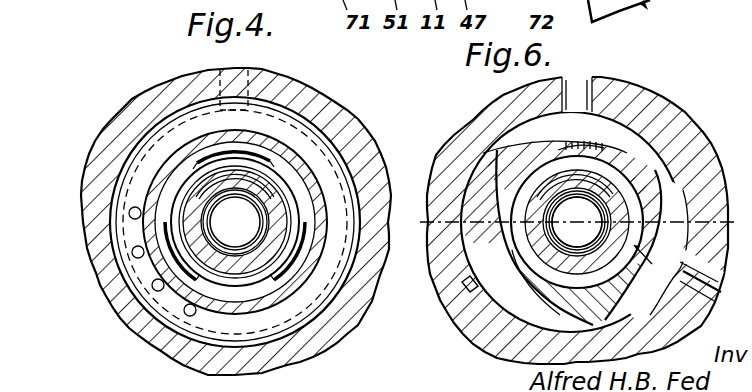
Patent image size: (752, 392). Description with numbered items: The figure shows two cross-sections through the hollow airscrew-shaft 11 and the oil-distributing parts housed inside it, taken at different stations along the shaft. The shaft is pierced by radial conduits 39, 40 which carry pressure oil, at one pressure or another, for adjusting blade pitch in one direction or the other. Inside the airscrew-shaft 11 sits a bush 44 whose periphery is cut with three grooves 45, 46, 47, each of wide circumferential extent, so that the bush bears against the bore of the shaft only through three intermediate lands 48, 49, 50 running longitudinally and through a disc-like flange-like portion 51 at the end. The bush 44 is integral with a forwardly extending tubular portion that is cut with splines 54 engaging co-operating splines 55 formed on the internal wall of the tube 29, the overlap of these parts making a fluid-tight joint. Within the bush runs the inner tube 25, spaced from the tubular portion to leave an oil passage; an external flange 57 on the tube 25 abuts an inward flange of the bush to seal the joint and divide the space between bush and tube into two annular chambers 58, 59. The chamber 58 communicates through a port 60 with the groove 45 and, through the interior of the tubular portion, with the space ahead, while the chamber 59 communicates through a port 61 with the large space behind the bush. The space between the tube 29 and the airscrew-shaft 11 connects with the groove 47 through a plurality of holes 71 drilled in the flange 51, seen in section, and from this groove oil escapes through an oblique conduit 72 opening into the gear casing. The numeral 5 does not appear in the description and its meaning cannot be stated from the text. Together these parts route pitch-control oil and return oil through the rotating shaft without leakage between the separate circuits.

In FIG. 4, the shaft 5 is at (160, 268).
In FIG. 6, the shaft 5 is at (577, 222).
In FIG. 4, the airscrew-shaft 11 is at (293, 100).
In FIG. 6, the airscrew-shaft 11 is at (478, 126).
In FIG. 4, the inner tube 25 is at (186, 133).
In FIG. 6, the inner tube 25 is at (495, 270).
In FIG. 4, the tube 29 is at (197, 200).
In FIG. 4, the radial conduit 39 is at (242, 74).
In FIG. 6, the radial conduit 39 is at (577, 96).
In FIG. 4, the radial conduit 40 is at (378, 282).
In FIG. 6, the radial conduit 40 is at (665, 270).
In FIG. 6, the bush 44 is at (543, 250).
In FIG. 6, the groove 45 is at (533, 132).
In FIG. 6, the groove 46 is at (718, 167).
In FIG. 6, the groove 47 is at (472, 300).
In FIG. 6, the land 48 is at (482, 170).
In FIG. 6, the land 49 is at (670, 125).
In FIG. 6, the land 50 is at (525, 345).
In FIG. 4, the flange-like portion 51 is at (296, 180).
In FIG. 6, the splines 54 is at (462, 150).
In FIG. 4, the splines 55 is at (360, 132).
In FIG. 6, the external flange 57 is at (625, 135).
In FIG. 6, the annular chamber 58 is at (605, 160).
In FIG. 6, the annular chamber 59 is at (478, 335).
In FIG. 6, the port 60 is at (577, 158).
In FIG. 6, the port 61 is at (676, 318).
In FIG. 4, the holes 71 is at (112, 215).
In FIG. 4, the oblique conduit 72 is at (123, 326).
In FIG. 6, the oblique conduit 72 is at (500, 292).